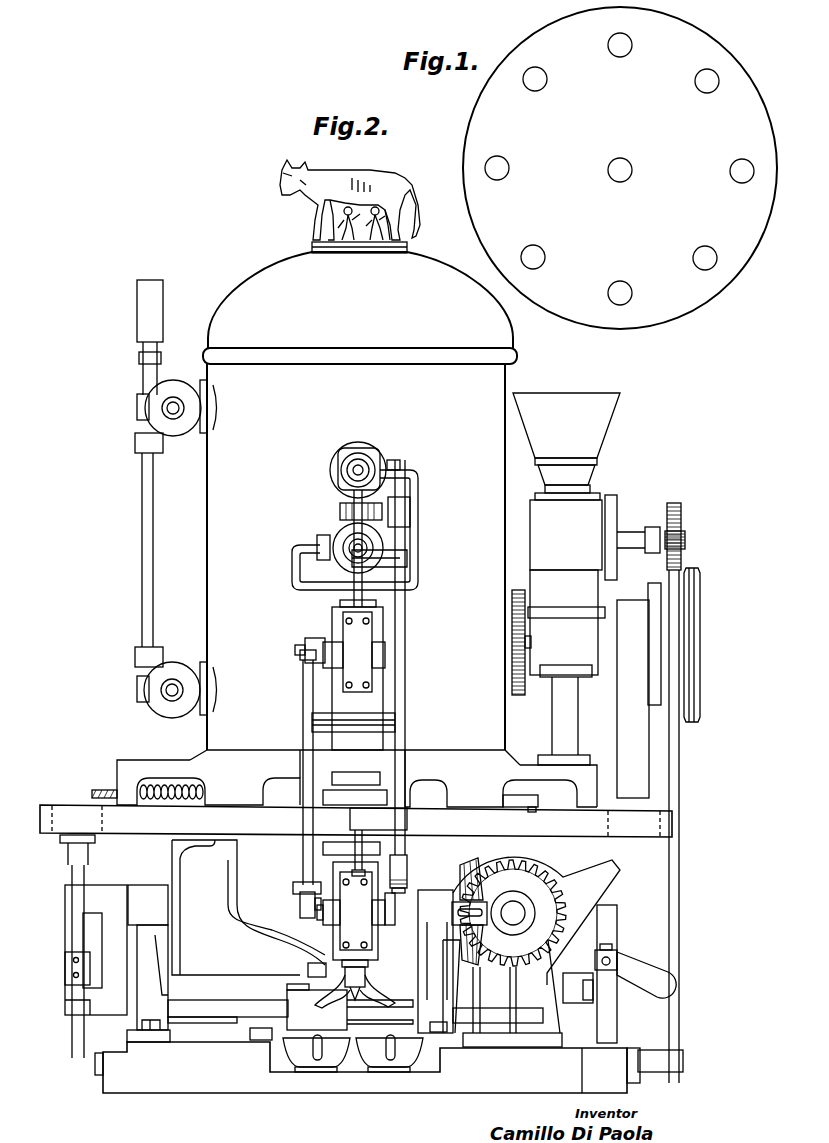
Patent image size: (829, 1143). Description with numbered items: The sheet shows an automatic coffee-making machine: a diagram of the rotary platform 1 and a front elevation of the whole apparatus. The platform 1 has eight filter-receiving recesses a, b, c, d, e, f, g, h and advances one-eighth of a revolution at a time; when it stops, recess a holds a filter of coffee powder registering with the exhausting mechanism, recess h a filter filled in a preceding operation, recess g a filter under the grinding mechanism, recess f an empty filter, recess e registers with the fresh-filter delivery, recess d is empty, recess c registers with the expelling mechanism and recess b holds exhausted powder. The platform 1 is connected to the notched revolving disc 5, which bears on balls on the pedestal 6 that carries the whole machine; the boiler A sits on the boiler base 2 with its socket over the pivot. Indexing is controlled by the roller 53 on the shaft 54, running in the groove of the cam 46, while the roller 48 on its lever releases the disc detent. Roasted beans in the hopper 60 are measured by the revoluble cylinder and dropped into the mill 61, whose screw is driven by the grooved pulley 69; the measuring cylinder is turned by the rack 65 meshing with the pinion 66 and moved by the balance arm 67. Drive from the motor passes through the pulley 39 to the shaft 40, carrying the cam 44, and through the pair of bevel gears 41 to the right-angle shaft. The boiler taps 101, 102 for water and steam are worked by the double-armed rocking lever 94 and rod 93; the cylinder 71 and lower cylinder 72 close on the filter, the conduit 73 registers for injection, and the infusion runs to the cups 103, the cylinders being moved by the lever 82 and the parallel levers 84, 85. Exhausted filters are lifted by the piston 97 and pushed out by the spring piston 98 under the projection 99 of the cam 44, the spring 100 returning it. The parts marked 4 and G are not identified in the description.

In FIG. 1, the platform 1 is at (620, 168).
In FIG. 2, the platform 1 is at (356, 821).
In FIG. 1, the recess a is at (620, 55).
In FIG. 1, the recess b is at (701, 89).
In FIG. 1, the recess c is at (729, 171).
In FIG. 1, the recess d is at (699, 253).
In FIG. 1, the recess e is at (620, 284).
In FIG. 1, the recess f is at (536, 250).
In FIG. 1, the recess g is at (504, 168).
In FIG. 1, the recess h is at (542, 80).
In FIG. 2, the boiler A is at (355, 462).
In FIG. 2, the boiler base 2 is at (357, 778).
In FIG. 2, the plate sections 4 is at (100, 815).
In FIG. 2, the notched revolving disc 5 is at (248, 1032).
In FIG. 2, the pedestal 6 is at (389, 1067).
In FIG. 2, the pulley 39 is at (611, 920).
In FIG. 2, the shaft 40 is at (520, 912).
In FIG. 2, the pair of bevel gears 41 is at (460, 905).
In FIG. 2, the cam 44 is at (482, 860).
In FIG. 2, the cam 46 is at (249, 908).
In FIG. 2, the roller 48 is at (303, 691).
In FIG. 2, the roller 53 is at (300, 978).
In FIG. 2, the shaft 54 is at (192, 1012).
In FIG. 2, the hopper 60 is at (566, 439).
In FIG. 2, the mill 61 is at (586, 625).
In FIG. 2, the rack 65 is at (673, 503).
In FIG. 2, the pinion 66 is at (683, 540).
In FIG. 2, the balance arm 67 is at (636, 967).
In FIG. 2, the grooved pulley 69 is at (699, 631).
In FIG. 2, the cylinder 71 is at (378, 623).
In FIG. 2, the lower cylinder 72 is at (333, 871).
In FIG. 2, the conduit 73 is at (362, 998).
In FIG. 2, the lever 82 is at (391, 914).
In FIG. 2, the lever 84 is at (312, 926).
In FIG. 2, the lever 85 is at (314, 640).
In FIG. 2, the rod 93 is at (403, 686).
In FIG. 2, the double armed rocking lever 94 is at (354, 496).
In FIG. 2, the piston 97 is at (73, 1039).
In FIG. 2, the spring piston 98 is at (534, 808).
In FIG. 2, the projection 99 is at (592, 880).
In FIG. 2, the spring 100 is at (158, 800).
In FIG. 2, the boiler tap 101 is at (388, 547).
In FIG. 2, the boiler tap 102 is at (364, 449).
In FIG. 2, the cups 103 is at (296, 1053).
In FIG. 2, the frame G is at (83, 925).